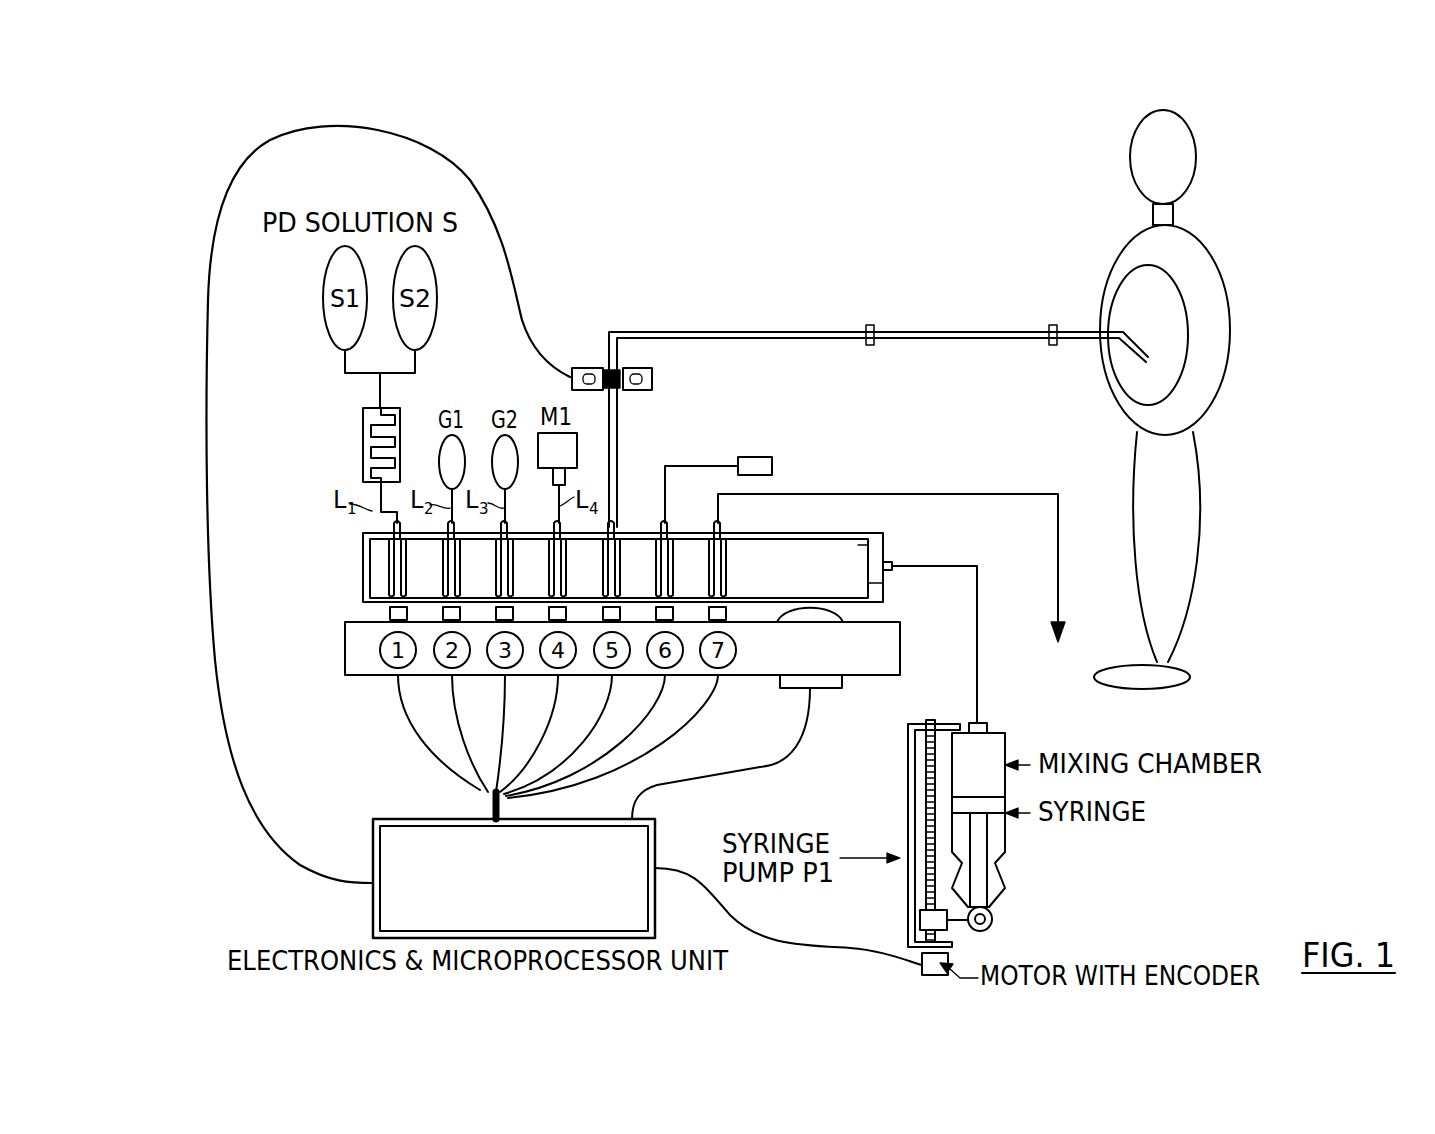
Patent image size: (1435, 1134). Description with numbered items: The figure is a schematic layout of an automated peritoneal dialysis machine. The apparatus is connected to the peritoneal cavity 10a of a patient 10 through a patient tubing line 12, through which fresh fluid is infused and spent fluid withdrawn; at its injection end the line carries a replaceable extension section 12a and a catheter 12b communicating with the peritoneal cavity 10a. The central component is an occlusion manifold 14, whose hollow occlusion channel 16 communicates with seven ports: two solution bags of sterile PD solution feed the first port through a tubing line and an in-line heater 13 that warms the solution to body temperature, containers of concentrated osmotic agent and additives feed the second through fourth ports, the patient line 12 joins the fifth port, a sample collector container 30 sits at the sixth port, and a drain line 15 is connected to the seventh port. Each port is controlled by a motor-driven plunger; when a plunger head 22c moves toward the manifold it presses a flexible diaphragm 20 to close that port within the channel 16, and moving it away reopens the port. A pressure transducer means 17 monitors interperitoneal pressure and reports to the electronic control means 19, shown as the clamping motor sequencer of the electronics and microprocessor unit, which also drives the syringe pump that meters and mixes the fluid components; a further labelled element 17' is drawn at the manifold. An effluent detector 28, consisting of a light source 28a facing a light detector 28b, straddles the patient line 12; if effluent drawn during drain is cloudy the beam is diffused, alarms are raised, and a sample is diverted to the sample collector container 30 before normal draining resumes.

The patient 10 is at (1169, 399).
The peritoneal cavity 10a is at (1172, 312).
The patient tubing line 12 is at (752, 332).
The replaceable extension section 12a is at (953, 330).
The catheter 12b is at (1085, 330).
The in-line heater 13 is at (363, 440).
The occlusion manifold 14 is at (592, 561).
The drain line 15 is at (1035, 494).
The occlusion channel 16 is at (377, 588).
The pressure transducer means 17 is at (858, 647).
The manifold chamber 17' is at (898, 553).
The electronic control means 19 is at (505, 921).
The flexible diaphragm 20 is at (855, 592).
The plunger head 22c is at (728, 614).
The effluent detector 28 is at (634, 379).
The light source 28a is at (587, 367).
The light detector 28b is at (641, 390).
The sample collector container 30 is at (773, 465).